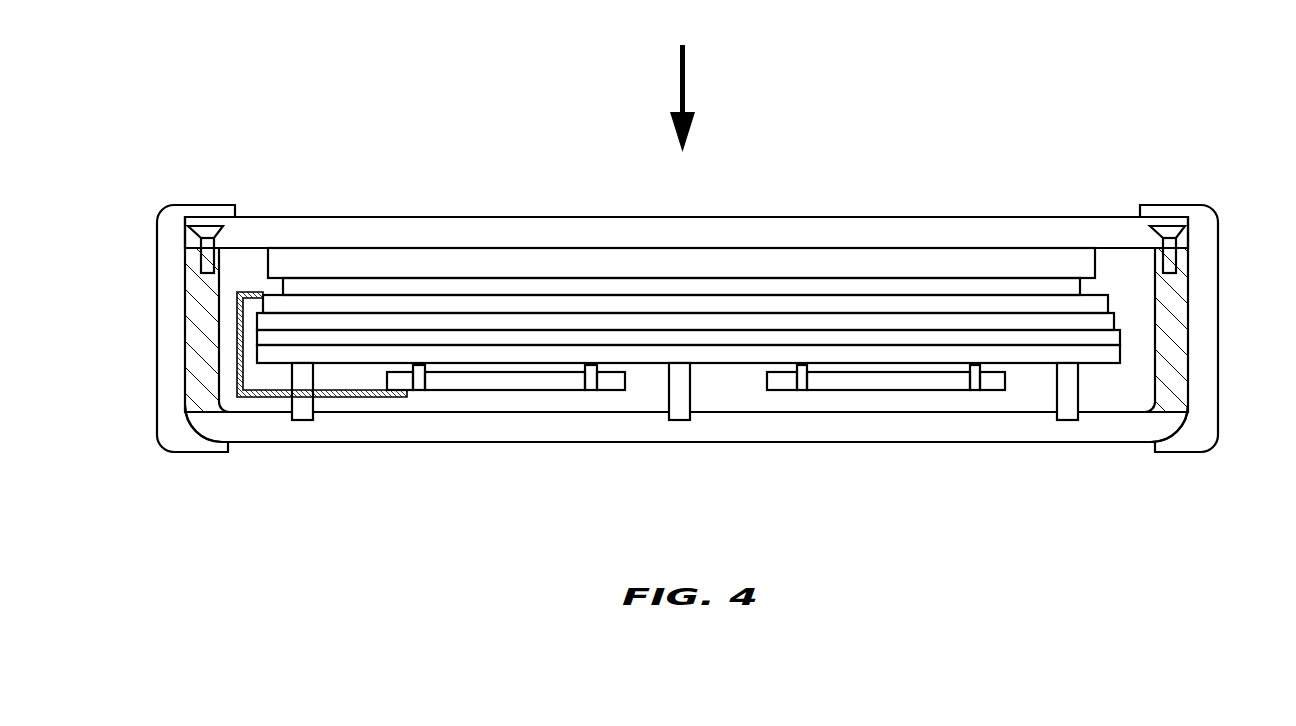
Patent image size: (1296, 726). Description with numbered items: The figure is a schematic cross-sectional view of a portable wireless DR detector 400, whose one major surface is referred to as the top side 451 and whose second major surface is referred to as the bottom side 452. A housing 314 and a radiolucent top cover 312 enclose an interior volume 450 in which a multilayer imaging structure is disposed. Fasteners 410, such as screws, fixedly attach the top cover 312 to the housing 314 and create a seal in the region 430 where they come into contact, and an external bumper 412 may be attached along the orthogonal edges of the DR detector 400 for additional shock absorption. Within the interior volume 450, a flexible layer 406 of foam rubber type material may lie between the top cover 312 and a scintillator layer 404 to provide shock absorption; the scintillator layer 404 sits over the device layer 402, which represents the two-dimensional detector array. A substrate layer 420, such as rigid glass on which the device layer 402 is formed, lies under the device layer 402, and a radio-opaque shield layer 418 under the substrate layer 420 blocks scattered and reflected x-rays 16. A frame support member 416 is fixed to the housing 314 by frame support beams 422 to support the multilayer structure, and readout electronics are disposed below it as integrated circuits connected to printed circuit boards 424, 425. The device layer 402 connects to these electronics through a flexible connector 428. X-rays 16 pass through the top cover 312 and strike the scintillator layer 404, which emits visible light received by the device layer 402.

The DR detector 400 is at (685, 302).
The x-rays 16 is at (678, 80).
The region 430 is at (233, 241).
The top side 451 is at (445, 210).
The device layer 402 is at (732, 305).
The scintillator layer 404 is at (832, 287).
The flexible layer 406 is at (940, 265).
The top cover 312 is at (686, 203).
The fasteners 410 is at (207, 256).
The interior volume 450 is at (772, 406).
The external bumper 412 is at (1208, 368).
The flexible connector 428 is at (250, 397).
The frame support beams 422 is at (305, 420).
The printed circuit board 424 is at (493, 383).
The substrate layer 420 is at (757, 325).
The radio-opaque shield layer 418 is at (888, 340).
The printed circuit board 425 is at (945, 383).
The frame support member 416 is at (1028, 352).
The housing 314 is at (1124, 428).
The bottom side 452 is at (386, 535).